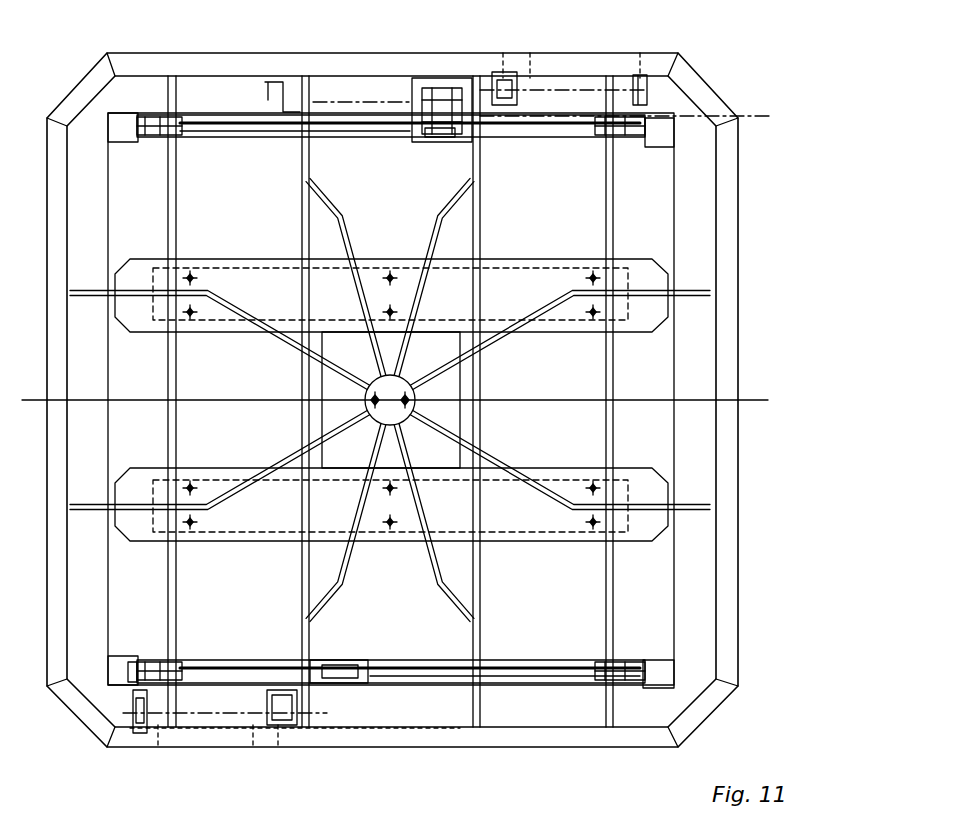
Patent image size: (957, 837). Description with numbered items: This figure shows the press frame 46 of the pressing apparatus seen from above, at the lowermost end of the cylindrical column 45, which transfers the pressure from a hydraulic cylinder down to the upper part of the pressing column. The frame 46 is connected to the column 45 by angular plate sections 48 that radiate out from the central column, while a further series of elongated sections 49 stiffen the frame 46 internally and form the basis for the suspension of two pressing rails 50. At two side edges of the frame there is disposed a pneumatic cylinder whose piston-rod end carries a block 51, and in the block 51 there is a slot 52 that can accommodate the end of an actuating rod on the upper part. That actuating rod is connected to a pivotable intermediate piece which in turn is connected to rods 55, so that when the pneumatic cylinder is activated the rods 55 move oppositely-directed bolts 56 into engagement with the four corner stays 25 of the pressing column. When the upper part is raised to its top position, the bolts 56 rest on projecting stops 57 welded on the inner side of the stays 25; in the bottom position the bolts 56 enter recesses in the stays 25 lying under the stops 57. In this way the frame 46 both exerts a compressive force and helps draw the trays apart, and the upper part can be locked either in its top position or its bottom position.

The corner stays 25 is at (122, 132).
The cylindrical column 45 is at (405, 385).
The press frame 46 is at (725, 200).
The angular plate sections 48 is at (442, 212).
The elongated sections 49 is at (300, 198).
The pressing rails 50 is at (567, 85).
The block 51 is at (415, 115).
The slot 52 is at (432, 137).
The rods 55 is at (245, 120).
The bolts 56 is at (140, 117).
The projecting stops 57 is at (133, 658).